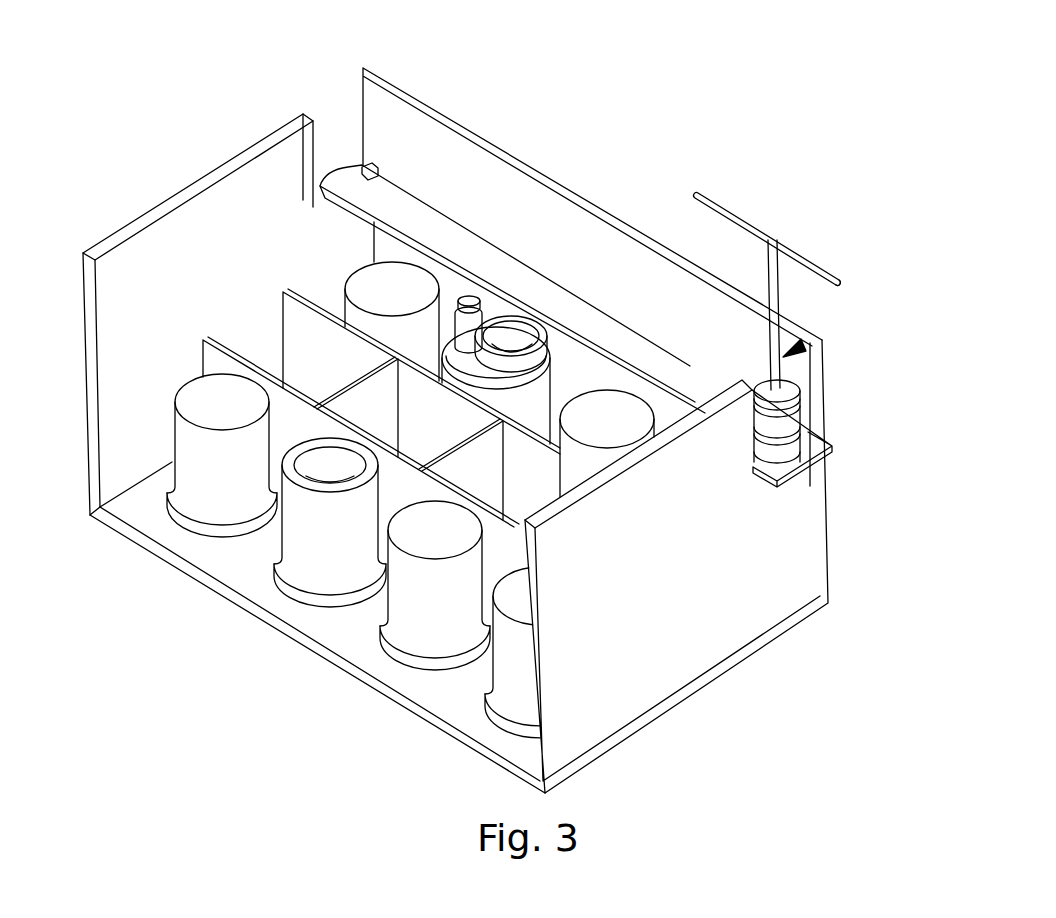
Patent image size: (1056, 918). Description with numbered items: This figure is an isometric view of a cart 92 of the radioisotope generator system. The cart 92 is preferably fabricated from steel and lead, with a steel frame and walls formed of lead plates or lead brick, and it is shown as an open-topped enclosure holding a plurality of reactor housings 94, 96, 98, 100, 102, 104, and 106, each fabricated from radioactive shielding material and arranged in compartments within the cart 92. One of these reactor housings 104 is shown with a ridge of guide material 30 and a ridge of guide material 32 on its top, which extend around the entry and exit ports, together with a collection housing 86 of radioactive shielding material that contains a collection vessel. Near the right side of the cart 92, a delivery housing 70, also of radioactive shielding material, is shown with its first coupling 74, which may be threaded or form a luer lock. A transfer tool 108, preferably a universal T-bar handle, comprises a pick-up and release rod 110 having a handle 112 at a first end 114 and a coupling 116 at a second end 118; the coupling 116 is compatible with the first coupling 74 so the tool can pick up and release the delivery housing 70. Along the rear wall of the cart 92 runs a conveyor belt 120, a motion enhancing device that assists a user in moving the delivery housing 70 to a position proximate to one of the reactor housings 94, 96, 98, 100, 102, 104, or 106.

The ridge of guide material 30 is at (575, 336).
The ridge of guide material 32 is at (516, 320).
The delivery housing 70 is at (794, 418).
The first coupling 74 is at (796, 398).
The collection housing 86 is at (474, 300).
The cart 92 is at (940, 502).
The reactor housing 94 is at (186, 533).
The reactor housing 96 is at (290, 600).
The reactor housing 98 is at (397, 663).
The reactor housing 100 is at (503, 730).
The reactor housing 102 is at (424, 266).
The reactor housing 104 is at (549, 325).
The reactor housing 106 is at (613, 455).
The transfer tool 108 is at (786, 354).
The pick-up and release rod 110 is at (812, 262).
The handle 112 is at (731, 214).
The first end 114 is at (777, 296).
The coupling 116 is at (801, 397).
The second end 118 is at (752, 382).
The conveyor belt 120 is at (362, 183).